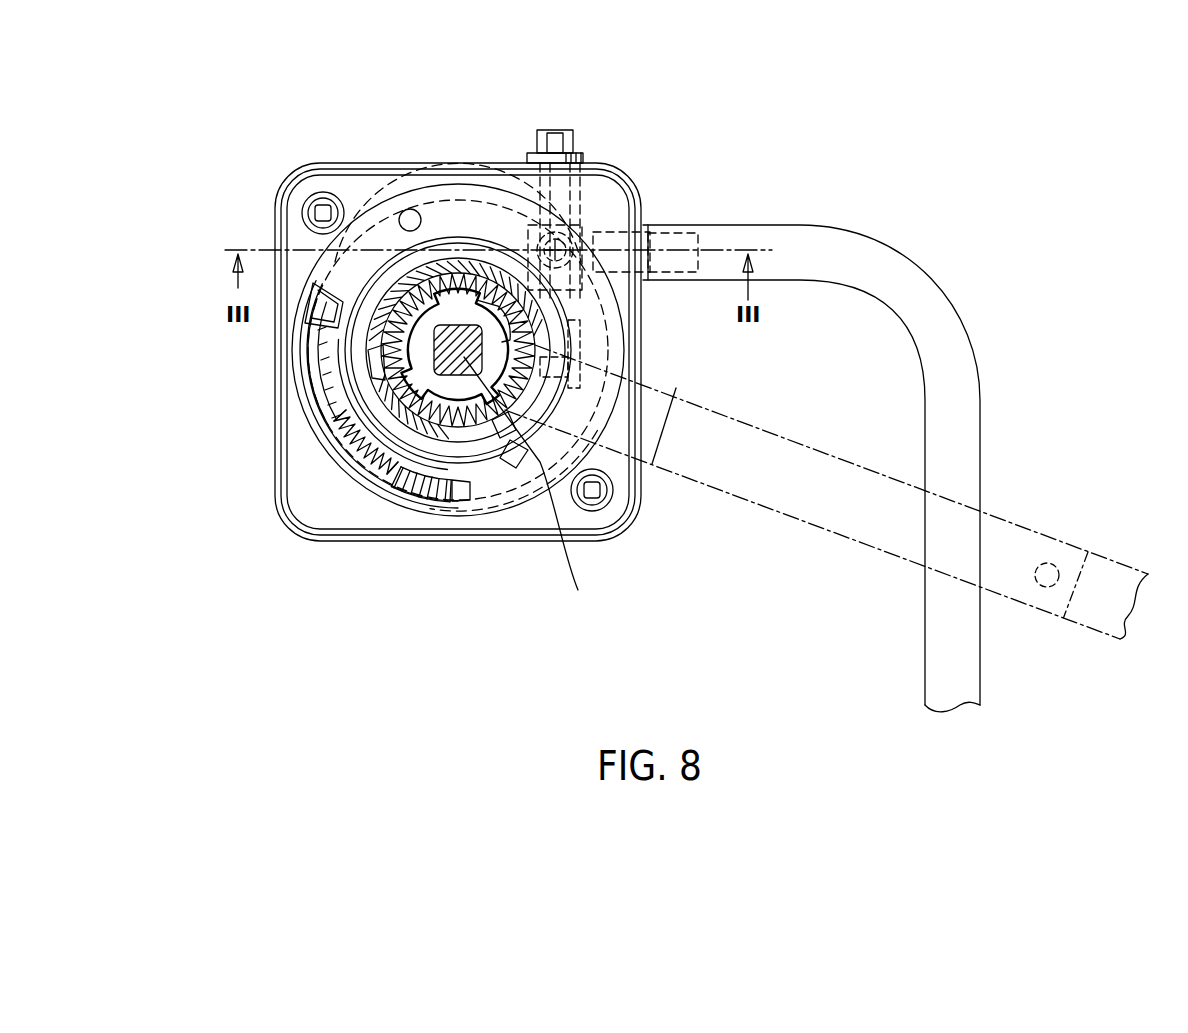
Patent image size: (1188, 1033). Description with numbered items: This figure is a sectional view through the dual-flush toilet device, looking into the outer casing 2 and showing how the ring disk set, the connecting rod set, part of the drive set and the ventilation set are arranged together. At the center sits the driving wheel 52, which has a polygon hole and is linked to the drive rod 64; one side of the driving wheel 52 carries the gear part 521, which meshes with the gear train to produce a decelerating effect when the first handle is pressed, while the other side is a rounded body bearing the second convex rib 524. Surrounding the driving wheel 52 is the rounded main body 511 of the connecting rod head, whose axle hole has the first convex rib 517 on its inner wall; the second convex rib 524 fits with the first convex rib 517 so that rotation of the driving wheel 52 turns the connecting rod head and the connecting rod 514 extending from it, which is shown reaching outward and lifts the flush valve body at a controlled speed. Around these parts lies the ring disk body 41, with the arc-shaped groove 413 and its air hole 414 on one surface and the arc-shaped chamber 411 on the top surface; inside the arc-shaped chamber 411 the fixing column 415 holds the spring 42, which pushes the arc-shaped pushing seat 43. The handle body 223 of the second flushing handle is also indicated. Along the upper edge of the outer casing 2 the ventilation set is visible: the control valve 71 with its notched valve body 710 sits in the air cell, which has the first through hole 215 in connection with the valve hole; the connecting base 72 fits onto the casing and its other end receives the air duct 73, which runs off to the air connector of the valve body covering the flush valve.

The outer casing 2 is at (462, 163).
The ring disk body 41 is at (368, 200).
The spring 42 is at (356, 448).
The arc-shaped pushing seat 43 is at (300, 383).
The driving wheel 52 is at (497, 343).
The drive rod 64 is at (529, 487).
The control valve 71 is at (574, 135).
The connecting base 72 is at (660, 228).
The air duct 73 is at (870, 236).
The first through hole 215 is at (574, 240).
The handle body 223 is at (508, 500).
The arc-shaped chamber 411 is at (398, 505).
The arc-shaped groove 413 is at (432, 198).
The air hole 414 is at (408, 209).
The fixing column 415 is at (432, 505).
The rounded main body 511 is at (485, 500).
The connecting rod 514 is at (783, 513).
The first convex rib 517 is at (403, 325).
The gear part 521 is at (494, 505).
The second convex rib 524 is at (540, 322).
The valve body 710 is at (519, 195).